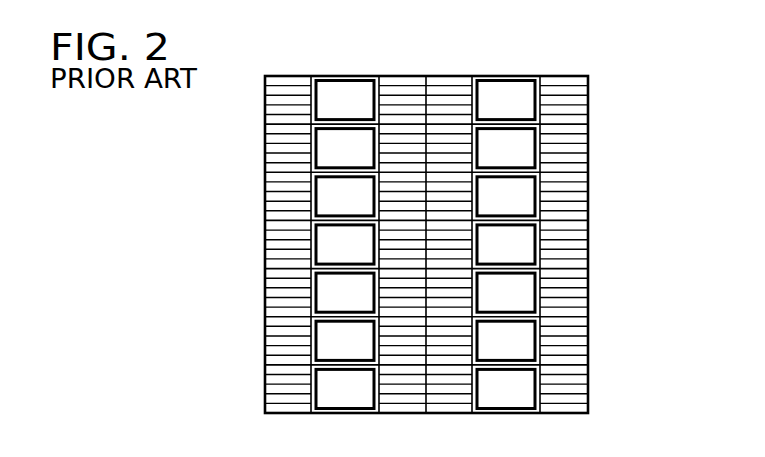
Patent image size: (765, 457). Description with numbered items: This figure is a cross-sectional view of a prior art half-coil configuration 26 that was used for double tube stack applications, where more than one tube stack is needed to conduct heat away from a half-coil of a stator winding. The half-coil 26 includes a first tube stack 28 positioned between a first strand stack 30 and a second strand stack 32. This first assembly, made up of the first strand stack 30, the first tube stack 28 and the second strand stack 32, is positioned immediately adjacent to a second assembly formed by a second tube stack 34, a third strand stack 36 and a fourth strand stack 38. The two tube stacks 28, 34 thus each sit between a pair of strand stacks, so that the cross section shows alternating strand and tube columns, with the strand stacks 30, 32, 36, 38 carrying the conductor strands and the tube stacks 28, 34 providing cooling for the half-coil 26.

The half-coil configuration 26 is at (597, 83).
The first tube stack 28 is at (352, 76).
The first strand stack 30 is at (287, 407).
The second strand stack 32 is at (407, 407).
The second tube stack 34 is at (512, 76).
The third strand stack 36 is at (438, 408).
The fourth strand stack 38 is at (568, 408).